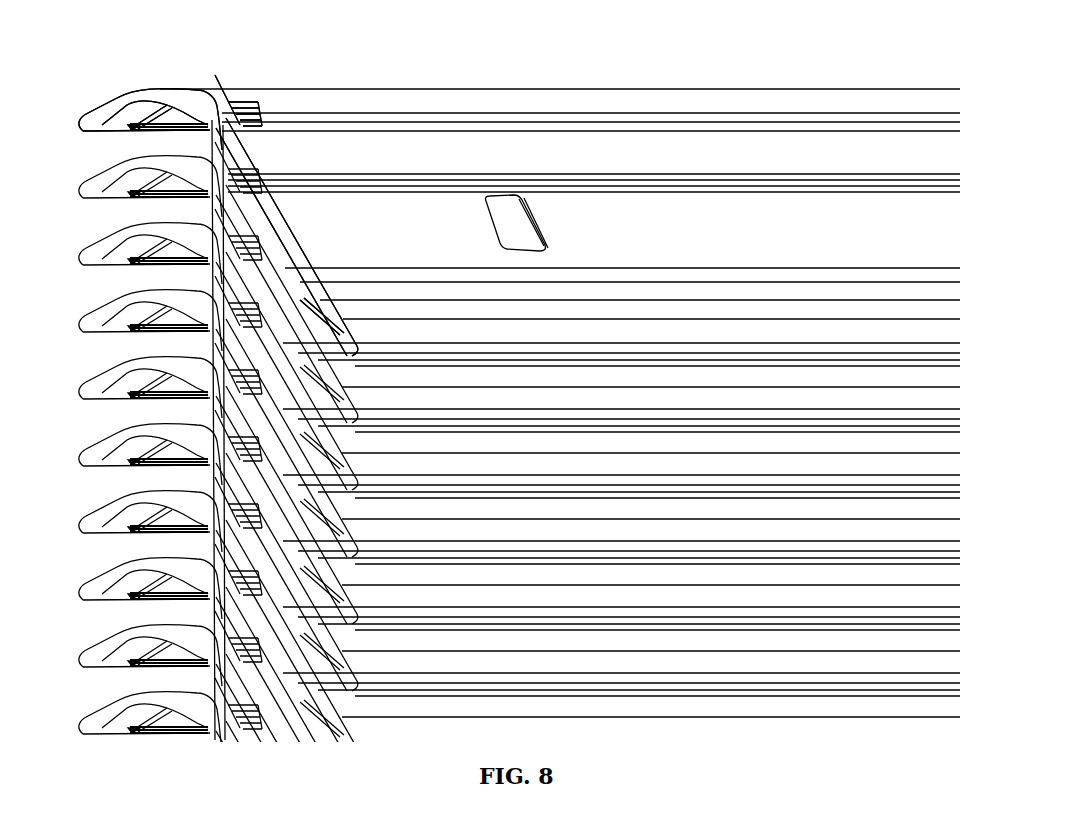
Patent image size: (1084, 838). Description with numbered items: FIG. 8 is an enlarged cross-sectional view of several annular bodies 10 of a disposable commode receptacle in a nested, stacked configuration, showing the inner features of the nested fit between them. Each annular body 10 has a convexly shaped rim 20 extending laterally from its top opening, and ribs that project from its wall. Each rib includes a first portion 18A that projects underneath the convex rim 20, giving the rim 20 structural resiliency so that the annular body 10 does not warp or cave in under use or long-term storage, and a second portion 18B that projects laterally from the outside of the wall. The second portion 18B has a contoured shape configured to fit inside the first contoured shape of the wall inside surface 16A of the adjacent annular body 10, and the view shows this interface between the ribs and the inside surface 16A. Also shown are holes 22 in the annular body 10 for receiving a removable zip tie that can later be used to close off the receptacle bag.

The annular body 10 is at (104, 85).
The inside surface 16A is at (285, 300).
The first portion 18A is at (174, 117).
The second portion 18B is at (318, 312).
The rim 20 is at (228, 97).
The holes 22 is at (541, 227).